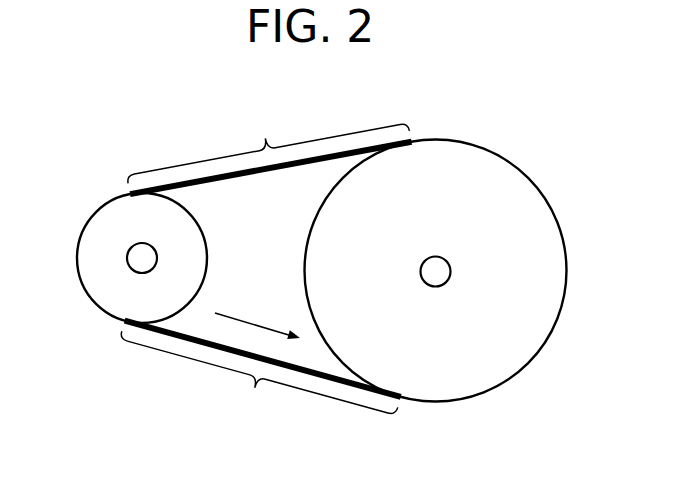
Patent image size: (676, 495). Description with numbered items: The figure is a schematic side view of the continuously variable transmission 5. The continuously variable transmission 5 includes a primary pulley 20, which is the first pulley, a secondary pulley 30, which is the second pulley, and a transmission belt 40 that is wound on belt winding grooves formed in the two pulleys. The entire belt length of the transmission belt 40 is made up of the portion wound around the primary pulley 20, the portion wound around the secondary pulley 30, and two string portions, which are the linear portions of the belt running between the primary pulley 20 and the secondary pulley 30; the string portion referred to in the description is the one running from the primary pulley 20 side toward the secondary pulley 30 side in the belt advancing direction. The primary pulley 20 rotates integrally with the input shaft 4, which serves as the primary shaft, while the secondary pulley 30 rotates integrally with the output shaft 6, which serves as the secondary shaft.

The input shaft 4 is at (127, 253).
The primary pulley 20 is at (95, 321).
The transmission belt 40 is at (238, 176).
The continuously variable transmission 5 is at (487, 117).
The output shaft 6 is at (450, 272).
The secondary pulley 30 is at (521, 394).